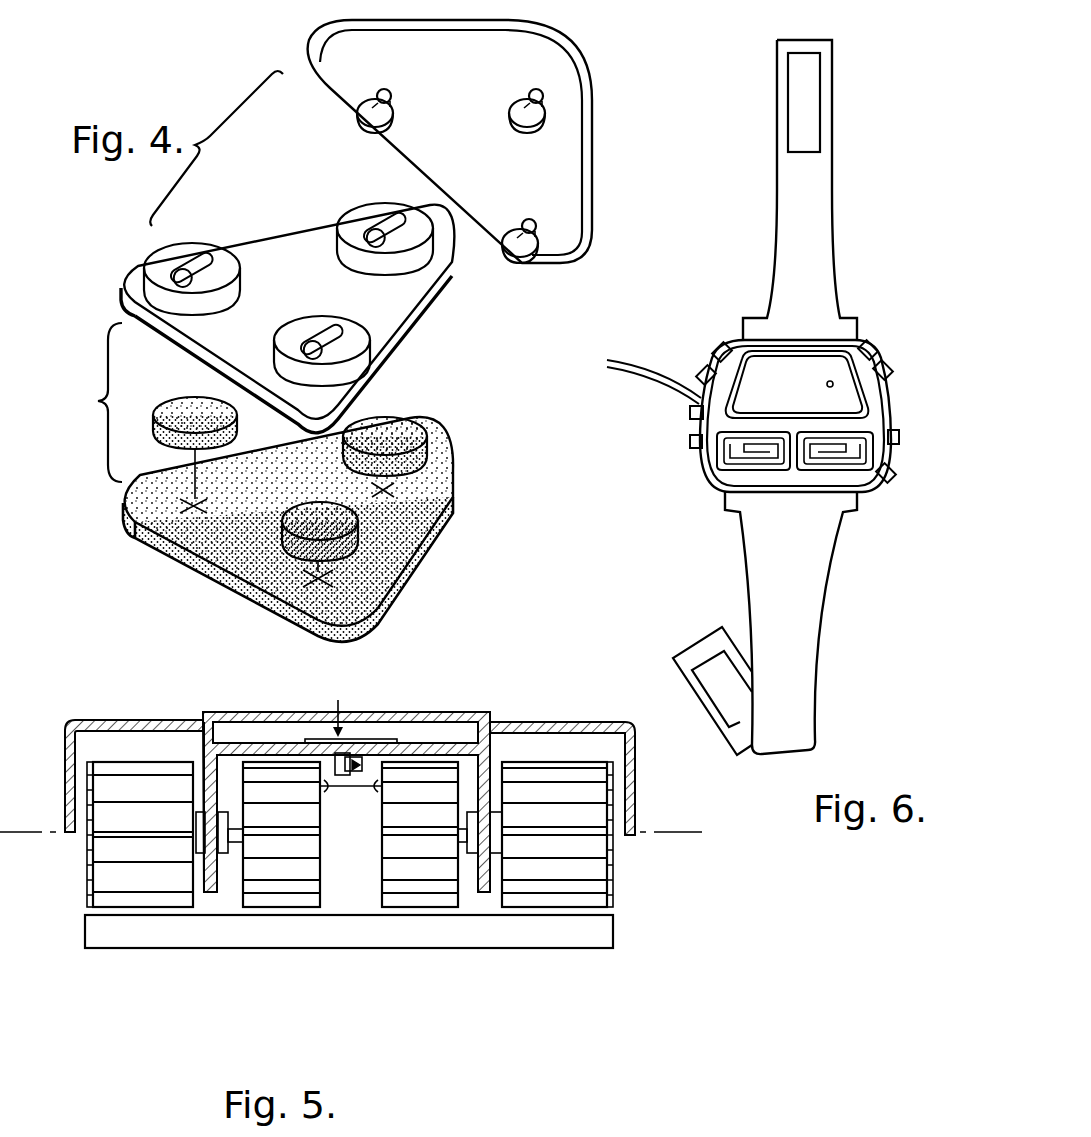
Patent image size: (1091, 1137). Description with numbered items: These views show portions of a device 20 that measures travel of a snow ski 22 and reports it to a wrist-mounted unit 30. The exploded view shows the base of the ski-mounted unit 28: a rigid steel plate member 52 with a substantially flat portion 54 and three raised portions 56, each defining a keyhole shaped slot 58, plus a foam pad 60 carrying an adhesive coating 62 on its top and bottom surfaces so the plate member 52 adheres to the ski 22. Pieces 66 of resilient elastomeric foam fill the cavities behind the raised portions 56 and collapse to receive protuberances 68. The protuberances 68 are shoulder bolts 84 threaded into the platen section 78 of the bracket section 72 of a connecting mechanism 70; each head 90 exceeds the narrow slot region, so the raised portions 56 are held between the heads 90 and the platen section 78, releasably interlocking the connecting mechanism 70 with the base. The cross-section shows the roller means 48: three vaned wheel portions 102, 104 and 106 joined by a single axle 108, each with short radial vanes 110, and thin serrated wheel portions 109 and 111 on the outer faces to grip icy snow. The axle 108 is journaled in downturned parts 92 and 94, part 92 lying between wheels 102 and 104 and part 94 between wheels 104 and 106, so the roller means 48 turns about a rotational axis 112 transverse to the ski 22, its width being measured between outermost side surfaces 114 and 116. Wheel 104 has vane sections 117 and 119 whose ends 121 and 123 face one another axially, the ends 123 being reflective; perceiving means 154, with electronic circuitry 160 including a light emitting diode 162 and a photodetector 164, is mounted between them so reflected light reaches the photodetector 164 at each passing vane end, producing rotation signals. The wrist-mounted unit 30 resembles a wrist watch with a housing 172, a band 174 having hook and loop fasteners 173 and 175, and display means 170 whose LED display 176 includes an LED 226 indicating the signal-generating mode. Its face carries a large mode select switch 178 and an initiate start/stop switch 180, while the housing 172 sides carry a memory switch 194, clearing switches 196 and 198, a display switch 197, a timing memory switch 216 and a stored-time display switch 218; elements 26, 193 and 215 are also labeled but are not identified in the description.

In FIG. 5, the device 20 is at (140, 657).
In FIG. 5, the ski 22 is at (84, 930).
In FIG. 6, the cable 26 is at (634, 362).
In FIG. 5, the ski-mounted unit 28 is at (363, 756).
In FIG. 6, the wrist-mounted unit 30 is at (752, 226).
In FIG. 5, the roller means 48 is at (365, 875).
In FIG. 4, the rigid plate member 52 is at (251, 298).
In FIG. 4, the flat portion 54 is at (410, 324).
In FIG. 4, the raised portions 56 is at (288, 275).
In FIG. 4, the keyhole shaped slot 58 is at (192, 290).
In FIG. 4, the foam pad 60 is at (322, 529).
In FIG. 4, the adhesive coating 62 is at (404, 548).
In FIG. 4, the foam material piece 66 is at (178, 400).
In FIG. 4, the protuberances 68 is at (357, 110).
In FIG. 4, the connecting mechanism 70 is at (481, 141).
In FIG. 5, the connecting mechanism 70 is at (349, 775).
In FIG. 4, the bracket section 72 is at (594, 150).
In FIG. 4, the platen section 78 is at (590, 183).
In FIG. 4, the shoulder bolts 84 is at (391, 94).
In FIG. 4, the bolt head 90 is at (427, 173).
In FIG. 5, the downturned part 92 is at (212, 776).
In FIG. 5, the downturned part 94 is at (490, 776).
In FIG. 5, the vaned wheel portion 102 is at (160, 907).
In FIG. 5, the vaned wheel portion 104 is at (312, 907).
In FIG. 5, the vaned wheel portion 106 is at (552, 907).
In FIG. 5, the axle 108 is at (204, 838).
In FIG. 5, the serrated wheel portion 109 is at (86, 882).
In FIG. 5, the vanes 110 is at (391, 875).
In FIG. 5, the serrated wheel portion 111 is at (614, 886).
In FIG. 5, the rotational axis 112 is at (650, 832).
In FIG. 5, the outermost side surface 114 is at (90, 745).
In FIG. 5, the outermost side surface 116 is at (612, 760).
In FIG. 5, the vane section 117 is at (231, 709).
In FIG. 5, the vane section 119 is at (438, 709).
In FIG. 5, the vane ends 121 is at (281, 794).
In FIG. 5, the vane ends 123 is at (405, 794).
In FIG. 5, the perceiving means 154 is at (338, 700).
In FIG. 5, the electronic circuitry 160 is at (350, 739).
In FIG. 5, the light emitting diode 162 is at (372, 760).
In FIG. 5, the photodetector 164 is at (358, 772).
In FIG. 6, the display means 170 is at (778, 399).
In FIG. 6, the housing 172 is at (808, 346).
In FIG. 6, the hook type fastener 173 is at (700, 646).
In FIG. 6, the band 174 is at (775, 397).
In FIG. 6, the loop type fastener 175 is at (822, 94).
In FIG. 6, the LED display 176 is at (832, 352).
In FIG. 6, the mode select switch 178 is at (760, 466).
In FIG. 6, the initiate switch 180 is at (822, 466).
In FIG. 6, the push button 193 is at (894, 476).
In FIG. 6, the manually-operable switch 194 is at (700, 370).
In FIG. 6, the clearing switch 196 is at (716, 346).
In FIG. 6, the display switch 197 is at (690, 412).
In FIG. 6, the clearing switch 198 is at (690, 442).
In FIG. 6, the push button 215 is at (889, 372).
In FIG. 6, the switch 216 is at (876, 350).
In FIG. 6, the switch 218 is at (899, 438).
In FIG. 6, the LED 226 is at (834, 385).